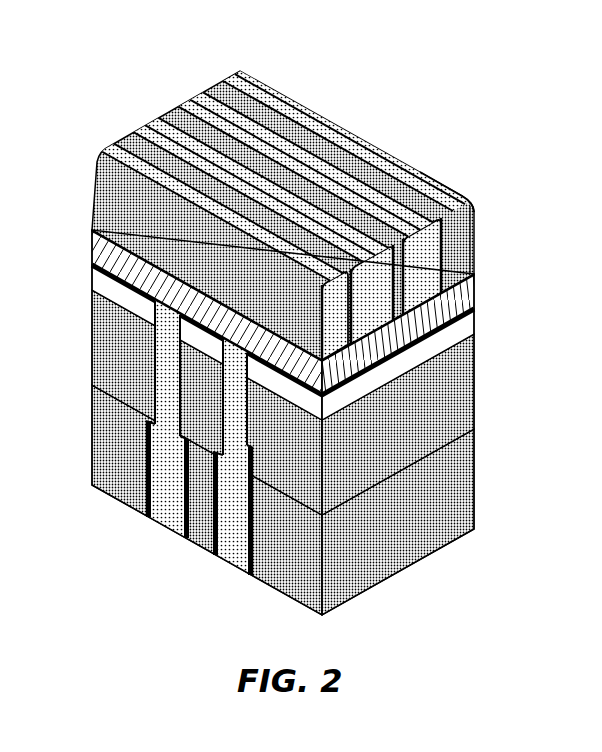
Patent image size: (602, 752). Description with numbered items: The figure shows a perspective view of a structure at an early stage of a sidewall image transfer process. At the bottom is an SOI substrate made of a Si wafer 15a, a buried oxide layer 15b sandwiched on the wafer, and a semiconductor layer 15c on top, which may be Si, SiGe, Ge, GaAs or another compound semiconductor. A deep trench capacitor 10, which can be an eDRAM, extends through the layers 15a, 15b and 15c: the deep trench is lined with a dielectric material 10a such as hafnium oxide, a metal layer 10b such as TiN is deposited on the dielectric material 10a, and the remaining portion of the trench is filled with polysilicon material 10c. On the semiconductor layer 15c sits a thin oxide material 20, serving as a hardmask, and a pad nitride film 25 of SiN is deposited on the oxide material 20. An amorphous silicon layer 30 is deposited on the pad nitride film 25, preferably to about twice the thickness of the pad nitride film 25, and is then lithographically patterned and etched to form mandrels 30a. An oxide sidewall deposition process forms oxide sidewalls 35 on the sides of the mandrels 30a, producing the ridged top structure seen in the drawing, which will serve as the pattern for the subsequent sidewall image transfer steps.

The deep trench capacitor 10 is at (234, 566).
The dielectric material 10a is at (143, 515).
The metal layer 10b is at (150, 521).
The polysilicon material 10c is at (165, 526).
The Si wafer 15a is at (477, 478).
The buried oxide layer 15b is at (477, 386).
The semiconductor layer 15c is at (477, 331).
The oxide material 20 is at (476, 308).
The pad nitride film 25 is at (471, 290).
The amorphous silicon layer 30 is at (481, 232).
The mandrels 30a is at (478, 204).
The oxide sidewalls 35 is at (390, 172).